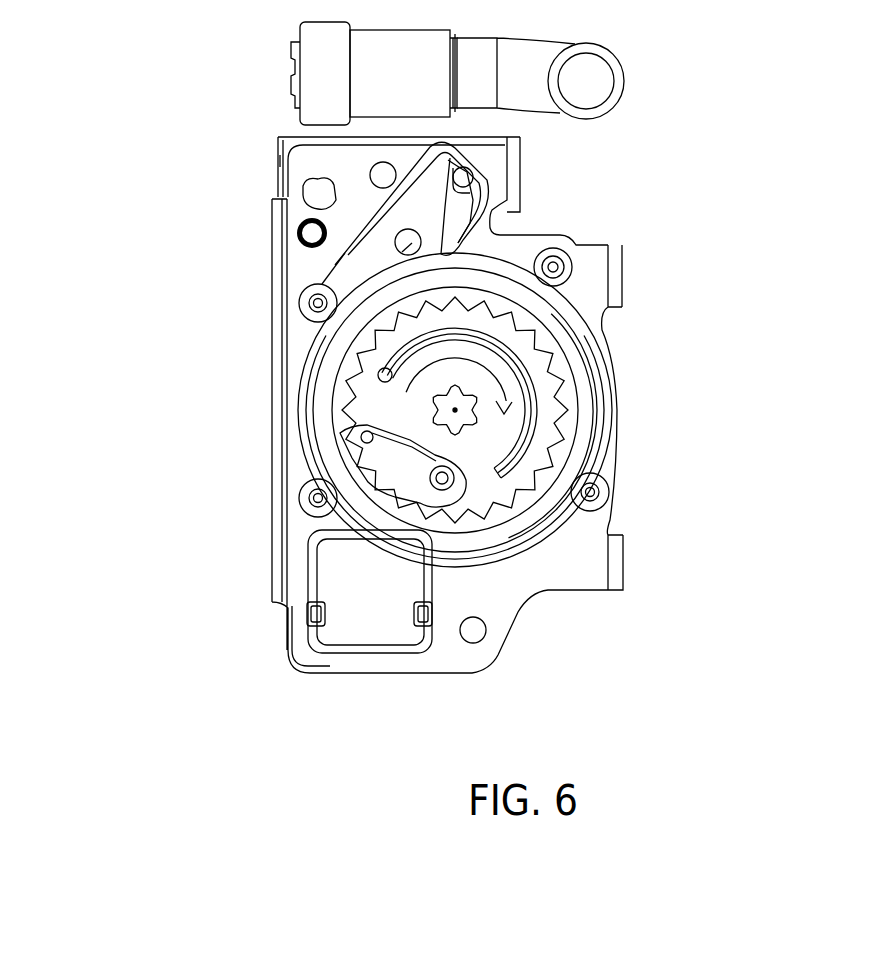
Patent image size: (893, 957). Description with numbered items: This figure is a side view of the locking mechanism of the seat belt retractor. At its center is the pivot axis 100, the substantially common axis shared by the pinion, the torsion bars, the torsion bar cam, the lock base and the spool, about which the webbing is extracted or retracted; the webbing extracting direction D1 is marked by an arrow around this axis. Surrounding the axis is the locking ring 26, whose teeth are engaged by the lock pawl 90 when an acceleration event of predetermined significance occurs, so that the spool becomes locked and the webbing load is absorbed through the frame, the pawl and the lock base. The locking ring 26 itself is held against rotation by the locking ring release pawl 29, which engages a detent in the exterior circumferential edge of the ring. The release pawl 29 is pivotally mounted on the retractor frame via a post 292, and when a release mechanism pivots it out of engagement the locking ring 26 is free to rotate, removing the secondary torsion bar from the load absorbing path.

The locking ring release pawl 29 is at (427, 215).
The post 292 is at (380, 257).
The locking ring 26 is at (485, 280).
The pivot axis 100 is at (430, 407).
The lock pawl 90 is at (383, 458).
The webbing extracting direction D1 is at (520, 389).